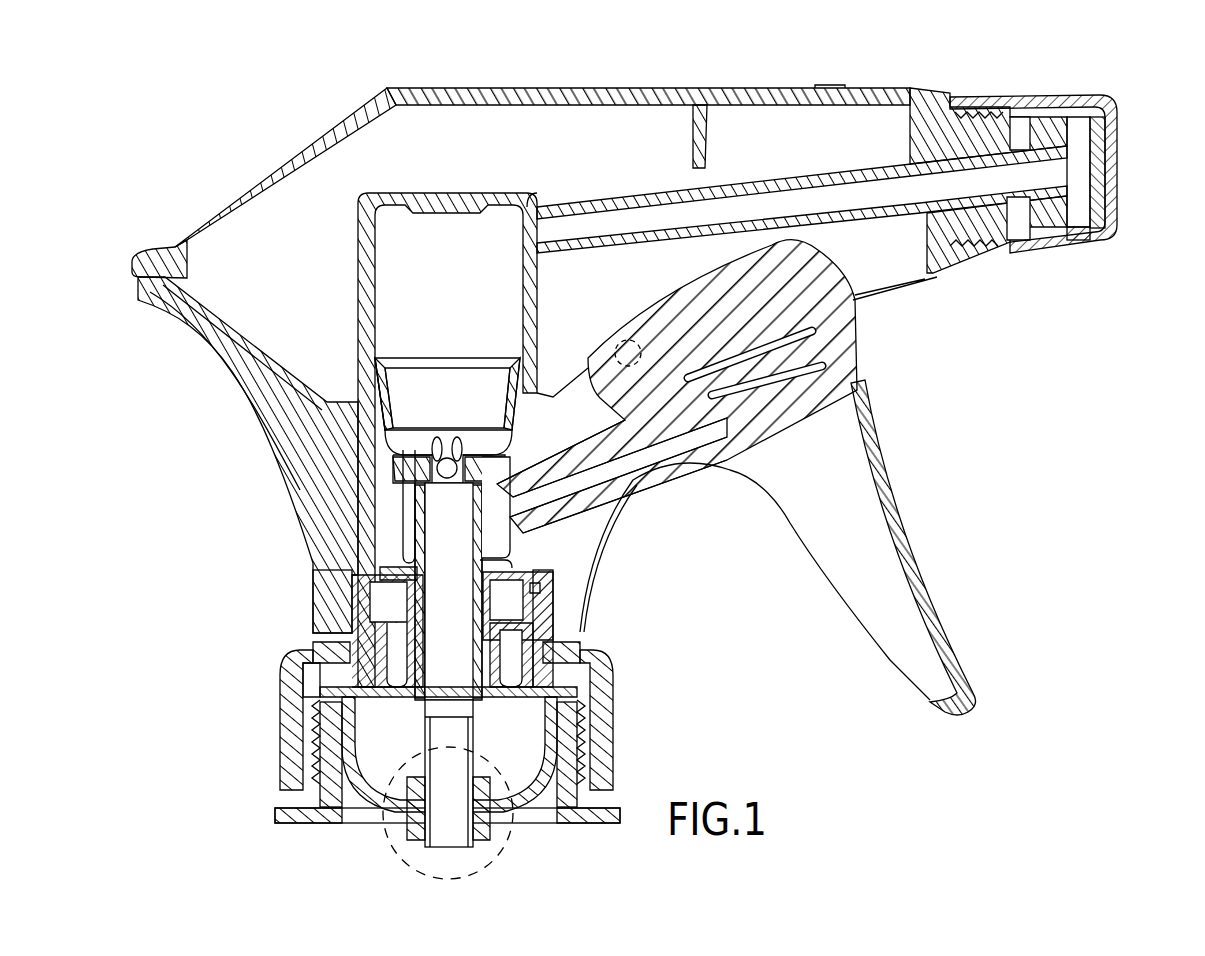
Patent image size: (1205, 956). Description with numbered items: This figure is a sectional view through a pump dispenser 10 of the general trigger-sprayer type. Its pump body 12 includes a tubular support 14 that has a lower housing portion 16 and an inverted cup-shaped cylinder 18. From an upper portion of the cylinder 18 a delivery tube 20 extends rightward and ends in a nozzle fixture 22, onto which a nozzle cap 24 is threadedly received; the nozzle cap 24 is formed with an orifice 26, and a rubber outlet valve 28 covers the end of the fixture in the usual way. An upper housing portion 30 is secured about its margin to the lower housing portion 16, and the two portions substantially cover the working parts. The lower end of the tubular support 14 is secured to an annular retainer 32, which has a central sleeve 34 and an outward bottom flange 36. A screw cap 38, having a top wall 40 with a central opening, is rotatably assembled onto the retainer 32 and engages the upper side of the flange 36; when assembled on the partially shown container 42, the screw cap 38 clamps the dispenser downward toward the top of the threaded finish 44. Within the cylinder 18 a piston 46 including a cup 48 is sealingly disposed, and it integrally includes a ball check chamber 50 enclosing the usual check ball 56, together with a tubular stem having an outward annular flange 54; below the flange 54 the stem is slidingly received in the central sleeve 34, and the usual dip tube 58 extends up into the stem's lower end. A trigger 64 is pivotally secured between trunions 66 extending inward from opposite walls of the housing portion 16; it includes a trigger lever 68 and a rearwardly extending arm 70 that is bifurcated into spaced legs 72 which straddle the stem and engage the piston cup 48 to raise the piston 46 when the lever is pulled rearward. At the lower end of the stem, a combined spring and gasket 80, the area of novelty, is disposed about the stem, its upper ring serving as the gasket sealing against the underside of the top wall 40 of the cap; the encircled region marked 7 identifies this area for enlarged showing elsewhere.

The pump dispenser 10 is at (834, 78).
The pump body 12 is at (262, 413).
The tubular support 14 is at (311, 597).
The lower housing portion 16 is at (227, 360).
The cylinder 18 is at (357, 265).
The delivery tube 20 is at (590, 197).
The nozzle fixture 22 is at (1007, 120).
The nozzle cap 24 is at (1060, 98).
The orifice 26 is at (1108, 164).
The rubber outlet valve 28 is at (1117, 221).
The upper housing portion 30 is at (610, 92).
The annular retainer 32 is at (573, 660).
The central sleeve 34 is at (497, 572).
The bottom flange 36 is at (575, 680).
The screw cap 38 is at (610, 734).
The top wall 40 is at (320, 663).
The container 42 is at (623, 820).
The threaded finish 44 is at (305, 745).
The piston 46 is at (447, 360).
The piston cup 48 is at (381, 375).
The ball check chamber 50 is at (446, 456).
The annular flange 54 is at (372, 572).
The check ball 56 is at (460, 455).
The dip tube 58 is at (435, 862).
The trigger 64 is at (873, 386).
The trunions 66 is at (628, 338).
The trigger lever 68 is at (913, 560).
The arm 70 is at (607, 478).
The legs 72 is at (505, 468).
The combined spring and gasket 80 is at (362, 804).
The detail circle FIG. 7 is at (502, 863).